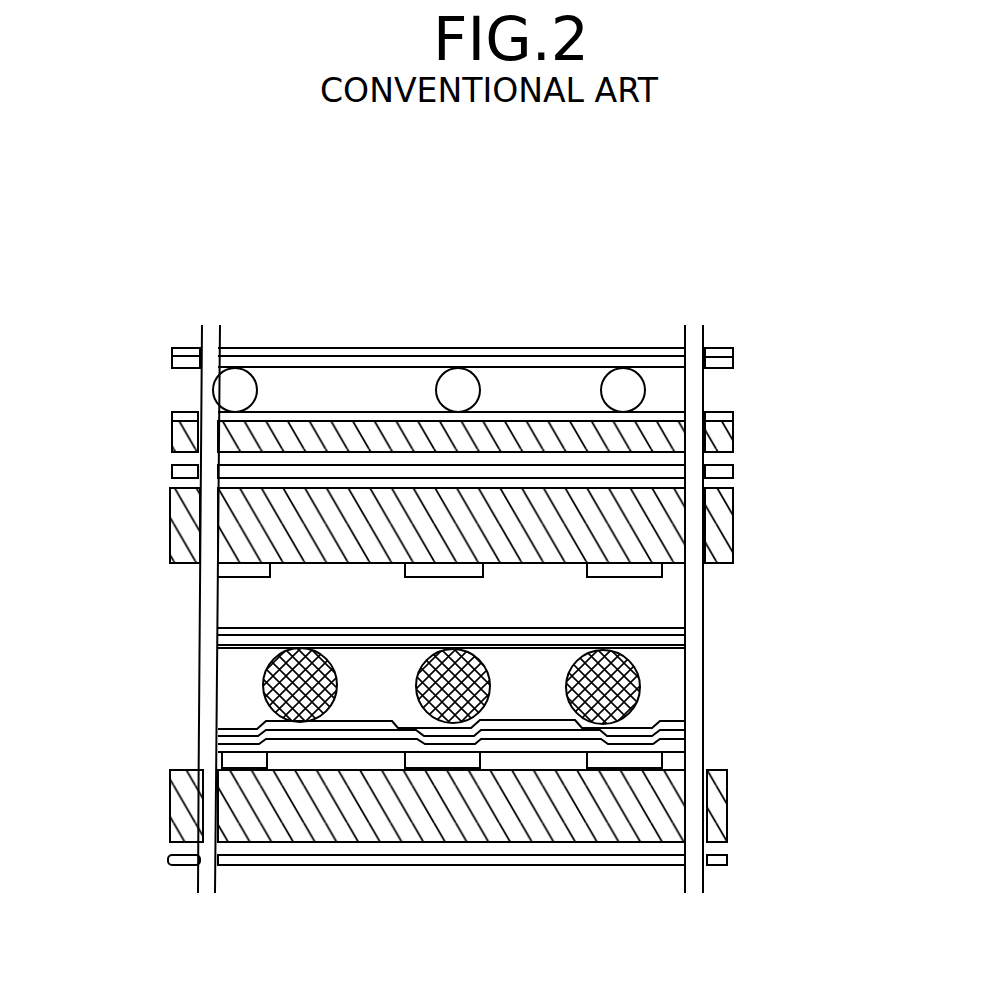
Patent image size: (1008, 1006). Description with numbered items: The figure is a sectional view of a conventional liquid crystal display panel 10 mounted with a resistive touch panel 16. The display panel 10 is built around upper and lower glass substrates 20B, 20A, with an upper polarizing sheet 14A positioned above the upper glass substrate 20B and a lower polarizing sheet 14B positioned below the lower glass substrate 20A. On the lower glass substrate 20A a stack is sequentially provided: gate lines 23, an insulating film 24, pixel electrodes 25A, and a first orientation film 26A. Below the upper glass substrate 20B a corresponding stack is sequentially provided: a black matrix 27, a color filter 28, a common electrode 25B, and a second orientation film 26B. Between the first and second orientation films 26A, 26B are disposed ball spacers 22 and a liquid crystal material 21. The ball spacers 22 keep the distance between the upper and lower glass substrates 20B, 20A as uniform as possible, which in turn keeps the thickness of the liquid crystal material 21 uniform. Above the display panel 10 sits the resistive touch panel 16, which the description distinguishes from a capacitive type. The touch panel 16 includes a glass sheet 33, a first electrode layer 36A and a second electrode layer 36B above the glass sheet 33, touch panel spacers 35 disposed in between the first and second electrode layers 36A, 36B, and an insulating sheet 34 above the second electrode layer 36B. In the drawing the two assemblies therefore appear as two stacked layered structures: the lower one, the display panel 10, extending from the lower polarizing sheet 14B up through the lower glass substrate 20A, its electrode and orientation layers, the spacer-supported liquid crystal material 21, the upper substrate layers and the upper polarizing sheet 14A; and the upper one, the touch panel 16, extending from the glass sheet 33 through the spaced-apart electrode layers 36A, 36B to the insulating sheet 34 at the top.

The liquid crystal display panel 10 is at (122, 720).
The resistive touch panel 16 is at (126, 412).
The upper polarizing sheet 14A is at (733, 473).
The lower polarizing sheet 14B is at (727, 860).
The lower glass substrate 20A is at (727, 803).
The upper glass substrate 20B is at (733, 522).
The liquid crystal material 21 is at (685, 670).
The ball spacers 22 is at (263, 685).
The gate lines 23 is at (663, 766).
The insulating film 24 is at (680, 745).
The pixel electrodes 25A is at (680, 732).
The common electrode 25B is at (677, 632).
The first orientation film 26A is at (687, 722).
The second orientation film 26B is at (677, 642).
The black matrix 27 is at (662, 570).
The color filter 28 is at (677, 603).
The glass sheet 33 is at (733, 437).
The insulating sheet 34 is at (733, 353).
The touch panel spacers 35 is at (647, 388).
The first electrode layer 36A is at (733, 418).
The second electrode layer 36B is at (733, 362).